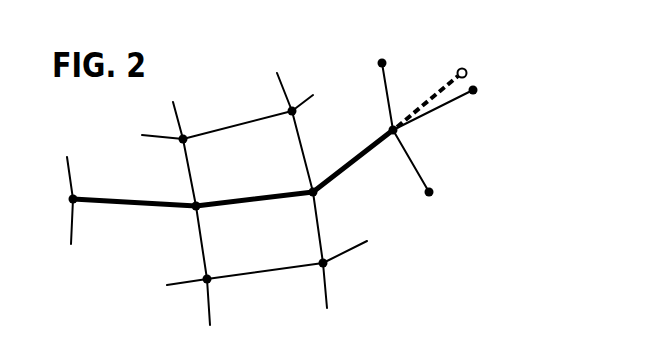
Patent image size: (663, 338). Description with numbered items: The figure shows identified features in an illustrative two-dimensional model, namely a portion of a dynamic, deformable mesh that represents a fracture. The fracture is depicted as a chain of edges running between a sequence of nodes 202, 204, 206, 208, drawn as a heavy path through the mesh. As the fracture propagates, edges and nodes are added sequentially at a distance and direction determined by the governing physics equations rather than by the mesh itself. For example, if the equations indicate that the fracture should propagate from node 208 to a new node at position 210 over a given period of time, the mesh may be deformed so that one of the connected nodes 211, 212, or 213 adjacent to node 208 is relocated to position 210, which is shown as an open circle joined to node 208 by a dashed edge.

The node 202 is at (77, 207).
The node 204 is at (192, 212).
The node 206 is at (318, 197).
The node 208 is at (390, 128).
The position 210 is at (458, 68).
The connected node 211 is at (378, 67).
The connected node 212 is at (477, 97).
The connected node 213 is at (433, 188).